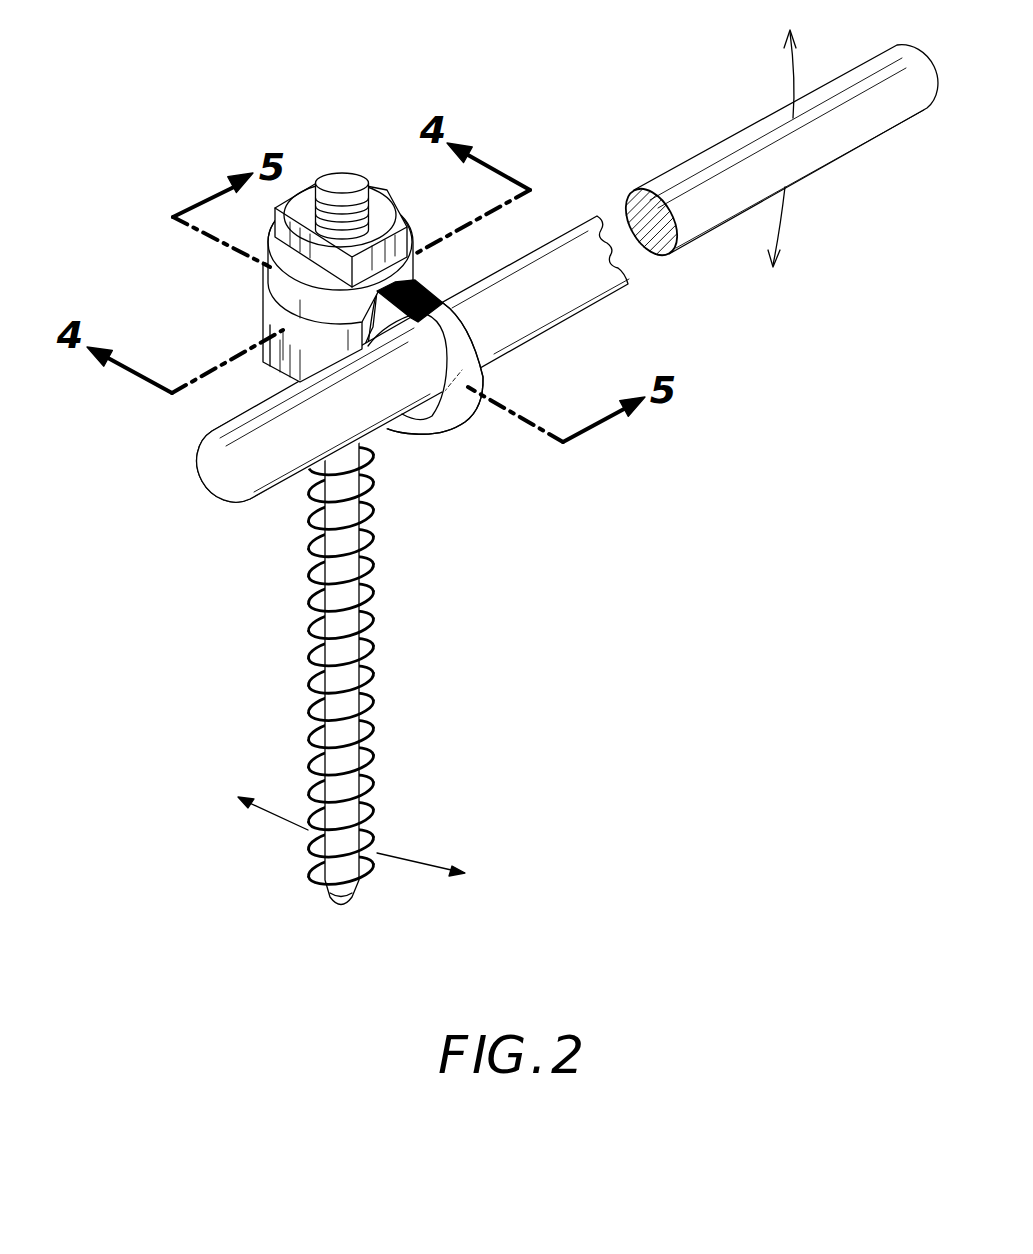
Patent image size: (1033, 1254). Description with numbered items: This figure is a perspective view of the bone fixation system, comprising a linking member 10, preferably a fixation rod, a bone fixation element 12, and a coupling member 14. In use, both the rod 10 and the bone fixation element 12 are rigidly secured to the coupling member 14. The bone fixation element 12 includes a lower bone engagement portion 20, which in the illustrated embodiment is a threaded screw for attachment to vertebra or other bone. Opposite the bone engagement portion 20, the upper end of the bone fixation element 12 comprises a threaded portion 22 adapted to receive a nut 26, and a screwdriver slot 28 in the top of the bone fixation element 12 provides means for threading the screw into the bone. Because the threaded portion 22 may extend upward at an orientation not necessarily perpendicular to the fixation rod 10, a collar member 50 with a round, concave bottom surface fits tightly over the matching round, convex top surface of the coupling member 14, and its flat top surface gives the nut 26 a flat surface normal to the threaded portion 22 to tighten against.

The linking member 10 is at (740, 150).
The bone fixation element 12 is at (369, 672).
The coupling member 14 is at (307, 288).
The bone engagement portion 20 is at (377, 690).
The threaded portion 22 is at (307, 205).
The nut 26 is at (390, 205).
The screwdriver slot 28 is at (335, 182).
The collar member 50 is at (285, 289).